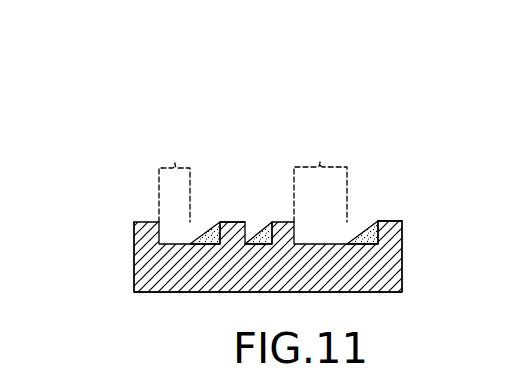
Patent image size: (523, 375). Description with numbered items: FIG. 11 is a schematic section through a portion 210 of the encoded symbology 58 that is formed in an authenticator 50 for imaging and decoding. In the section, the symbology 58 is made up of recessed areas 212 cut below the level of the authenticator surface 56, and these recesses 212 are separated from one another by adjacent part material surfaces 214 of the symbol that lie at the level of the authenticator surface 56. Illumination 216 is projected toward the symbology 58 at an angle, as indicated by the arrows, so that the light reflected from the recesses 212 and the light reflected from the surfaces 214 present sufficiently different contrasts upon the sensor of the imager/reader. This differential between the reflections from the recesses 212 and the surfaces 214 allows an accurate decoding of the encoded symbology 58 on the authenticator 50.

The authenticator 50 is at (402, 263).
The authenticator surface 56 is at (391, 219).
The encoded symbology 58 is at (148, 198).
The portion of encoded symbol 210 is at (414, 106).
The recessed areas 212 is at (365, 202).
The part material surfaces 214 is at (278, 221).
The illumination 216 is at (234, 152).